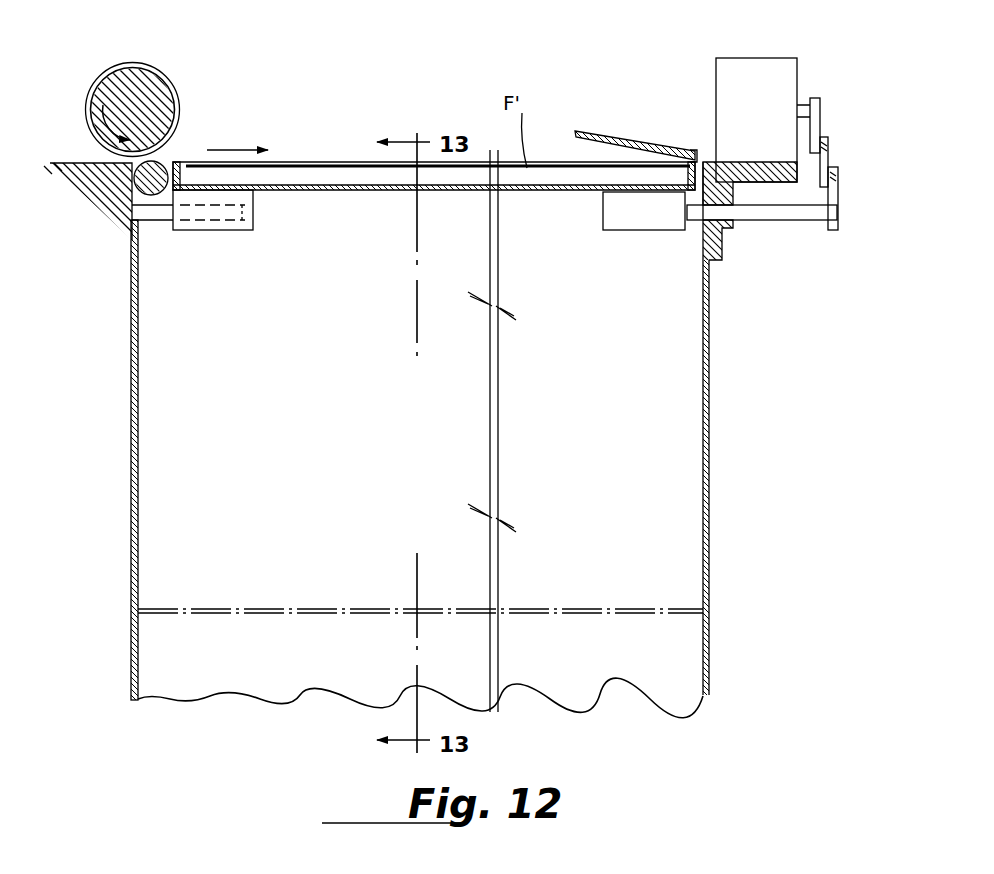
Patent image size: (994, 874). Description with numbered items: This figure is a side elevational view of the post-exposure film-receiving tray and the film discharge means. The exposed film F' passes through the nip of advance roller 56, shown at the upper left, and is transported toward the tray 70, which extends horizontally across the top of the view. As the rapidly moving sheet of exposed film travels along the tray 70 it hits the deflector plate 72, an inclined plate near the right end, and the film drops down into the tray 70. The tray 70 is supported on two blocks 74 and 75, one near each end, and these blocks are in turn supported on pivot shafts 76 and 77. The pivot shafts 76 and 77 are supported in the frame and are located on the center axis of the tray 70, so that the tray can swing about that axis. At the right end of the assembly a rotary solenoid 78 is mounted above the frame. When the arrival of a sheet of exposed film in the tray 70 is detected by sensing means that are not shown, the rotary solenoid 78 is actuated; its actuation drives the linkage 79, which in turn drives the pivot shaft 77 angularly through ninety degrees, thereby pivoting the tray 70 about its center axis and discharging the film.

The advance roller 56 is at (178, 97).
The tray 70 is at (372, 192).
The deflector plate 72 is at (613, 137).
The block 74 is at (240, 228).
The block 75 is at (648, 217).
The pivot shaft 76 is at (157, 215).
The pivot shaft 77 is at (778, 212).
The rotary solenoid 78 is at (732, 88).
The linkage 79 is at (815, 132).